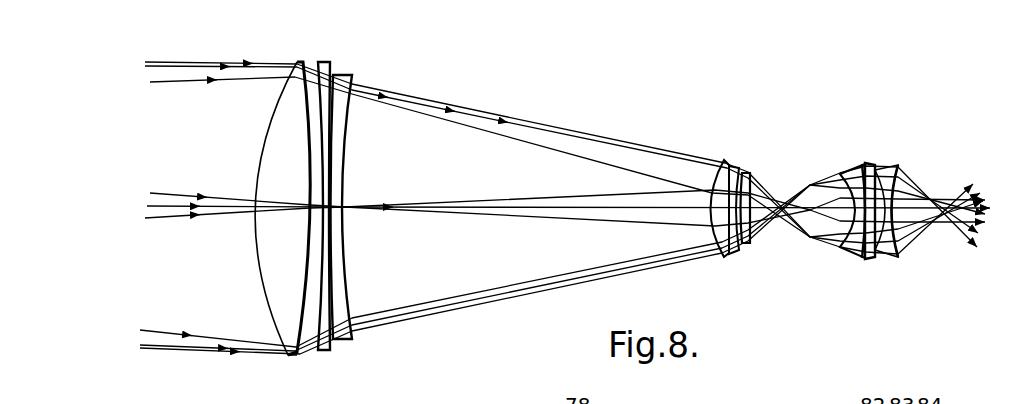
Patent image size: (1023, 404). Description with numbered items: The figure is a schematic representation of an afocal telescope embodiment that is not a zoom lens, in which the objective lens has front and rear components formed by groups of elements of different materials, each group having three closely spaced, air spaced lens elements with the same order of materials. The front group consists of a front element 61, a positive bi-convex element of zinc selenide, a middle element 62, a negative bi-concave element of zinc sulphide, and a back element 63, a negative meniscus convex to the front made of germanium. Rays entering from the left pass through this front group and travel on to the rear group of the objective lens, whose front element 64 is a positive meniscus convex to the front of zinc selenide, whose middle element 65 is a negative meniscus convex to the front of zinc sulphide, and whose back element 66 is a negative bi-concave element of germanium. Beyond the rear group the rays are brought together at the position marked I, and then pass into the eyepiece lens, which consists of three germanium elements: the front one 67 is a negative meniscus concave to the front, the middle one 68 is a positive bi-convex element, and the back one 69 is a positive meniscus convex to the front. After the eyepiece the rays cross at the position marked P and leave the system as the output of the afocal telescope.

The front element 61 is at (298, 62).
The middle element 62 is at (318, 66).
The back element 63 is at (348, 74).
The front element 64 is at (724, 162).
The middle element 65 is at (739, 169).
The back element 66 is at (749, 172).
The front eyepiece element 67 is at (840, 173).
The middle eyepiece element 68 is at (871, 166).
The back eyepiece element 69 is at (898, 168).
The intermediate image plane I is at (815, 244).
The exit pupil P is at (942, 235).